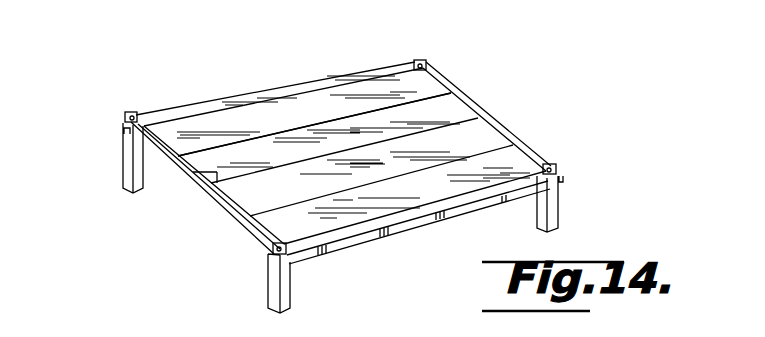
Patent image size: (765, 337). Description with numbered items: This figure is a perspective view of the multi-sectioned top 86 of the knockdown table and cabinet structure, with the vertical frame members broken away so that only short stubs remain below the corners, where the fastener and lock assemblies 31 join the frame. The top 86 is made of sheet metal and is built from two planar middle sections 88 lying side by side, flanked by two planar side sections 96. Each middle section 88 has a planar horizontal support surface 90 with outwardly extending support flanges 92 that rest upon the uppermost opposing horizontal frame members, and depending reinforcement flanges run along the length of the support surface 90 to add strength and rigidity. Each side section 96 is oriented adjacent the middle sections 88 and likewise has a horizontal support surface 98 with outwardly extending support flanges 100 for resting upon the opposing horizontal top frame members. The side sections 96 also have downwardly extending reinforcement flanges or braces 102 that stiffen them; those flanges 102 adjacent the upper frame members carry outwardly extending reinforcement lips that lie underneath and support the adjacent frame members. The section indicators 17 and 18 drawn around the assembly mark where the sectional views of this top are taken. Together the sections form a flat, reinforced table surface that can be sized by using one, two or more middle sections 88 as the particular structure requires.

The section line 17- 17 is at (215, 61).
The section line 18- 18 is at (525, 66).
The fastener and lock assembly 31 is at (126, 116).
The multi-sectioned top 86 is at (436, 58).
The middle section 88 is at (249, 196).
The planar horizontal support surface 90 is at (472, 145).
The support flanges 92 is at (194, 167).
The side section 96 is at (318, 101).
The horizontal support surface 98 is at (314, 124).
The support flanges 100 is at (253, 238).
The reinforcement flanges 102 is at (165, 4).